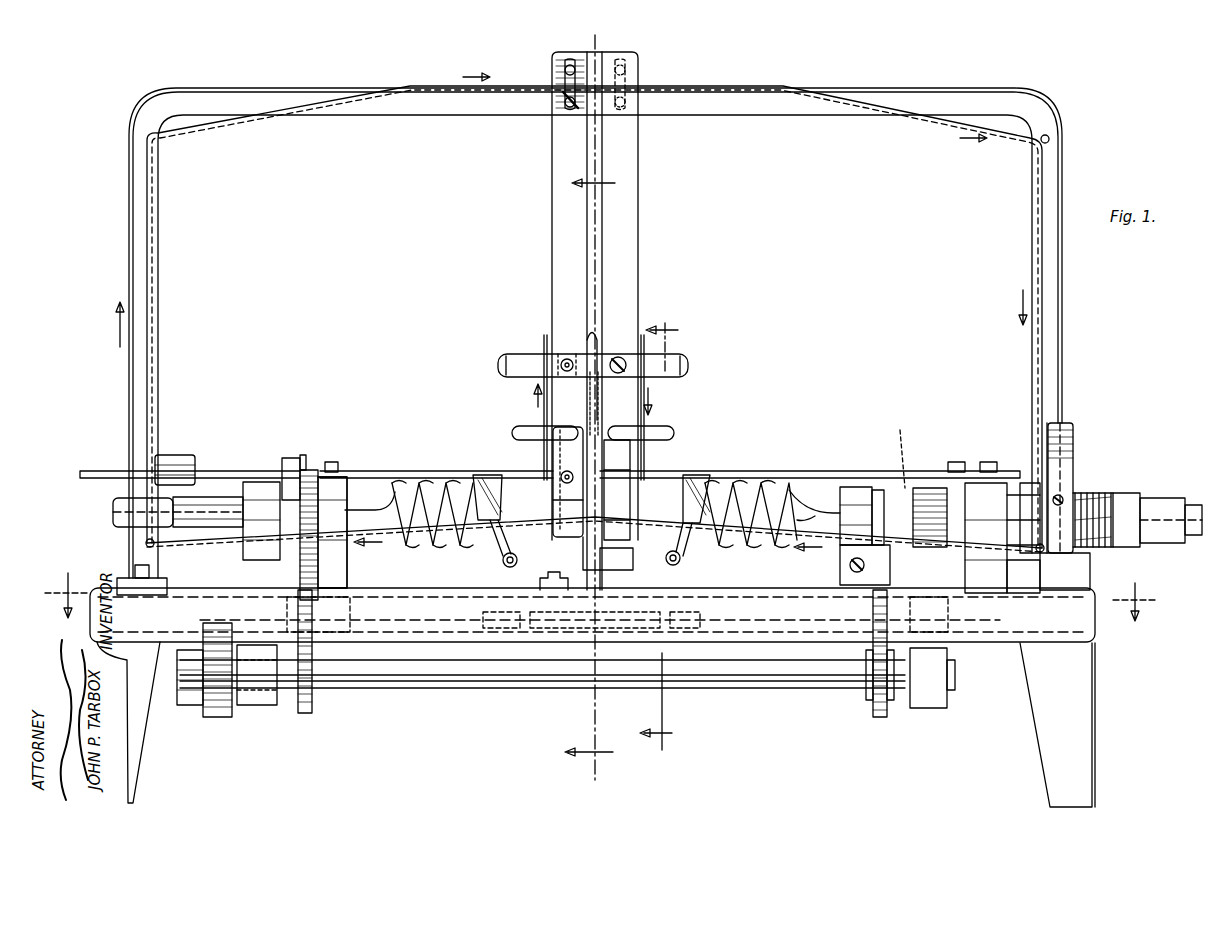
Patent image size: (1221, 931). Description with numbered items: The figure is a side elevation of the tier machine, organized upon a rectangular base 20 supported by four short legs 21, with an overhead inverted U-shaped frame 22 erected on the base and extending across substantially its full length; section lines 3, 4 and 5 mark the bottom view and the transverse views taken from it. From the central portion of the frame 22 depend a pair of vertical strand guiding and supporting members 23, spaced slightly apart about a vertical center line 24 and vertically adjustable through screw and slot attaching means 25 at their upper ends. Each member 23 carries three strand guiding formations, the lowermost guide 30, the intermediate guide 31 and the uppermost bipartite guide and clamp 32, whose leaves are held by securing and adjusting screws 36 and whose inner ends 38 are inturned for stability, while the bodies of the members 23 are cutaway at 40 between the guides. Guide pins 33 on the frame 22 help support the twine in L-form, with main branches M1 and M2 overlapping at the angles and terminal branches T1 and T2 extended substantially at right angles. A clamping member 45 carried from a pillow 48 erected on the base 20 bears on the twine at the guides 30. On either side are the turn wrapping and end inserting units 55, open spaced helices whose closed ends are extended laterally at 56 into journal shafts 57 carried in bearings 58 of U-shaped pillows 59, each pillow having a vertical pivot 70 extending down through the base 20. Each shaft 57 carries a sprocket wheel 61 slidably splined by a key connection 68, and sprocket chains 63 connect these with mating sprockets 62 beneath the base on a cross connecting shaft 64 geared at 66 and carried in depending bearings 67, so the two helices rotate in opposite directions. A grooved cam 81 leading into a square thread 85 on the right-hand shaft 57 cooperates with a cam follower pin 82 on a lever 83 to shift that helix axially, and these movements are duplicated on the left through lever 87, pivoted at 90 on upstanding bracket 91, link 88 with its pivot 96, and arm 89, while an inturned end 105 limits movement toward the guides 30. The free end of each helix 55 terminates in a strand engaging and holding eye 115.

The rectangular base 20 is at (1070, 628).
The short legs 21 is at (1094, 726).
The inverted U-shaped frame 22 is at (1060, 330).
The strand guiding and supporting members 23 is at (552, 235).
The vertical center line 24 is at (592, 38).
The screw and slot attaching means 25 is at (566, 105).
The lowermost strand guide 30 is at (550, 540).
The intermediate strand guide 31 is at (512, 433).
The uppermost guide and clamp 32 is at (500, 362).
The strand guiding and supporting pins 33 is at (162, 140).
The securing and adjusting screws 36 is at (620, 360).
The inner ends of guide members 38 is at (592, 330).
The cutaway 40 is at (552, 455).
The clamping member 45 is at (600, 412).
The pillow 48 is at (540, 578).
The turn wrapping and end inserting units 55 is at (425, 483).
The lateral extension of helix 56 is at (840, 490).
The journal shaft 57 is at (205, 497).
The bearing 58 is at (262, 482).
The U-shaped pillow 59 is at (347, 566).
The sprocket wheel 61 is at (330, 462).
The mating sprocket 62 is at (312, 708).
The sprocket chains 63 is at (868, 700).
The cross connecting shaft 64 is at (695, 690).
The gearing 66 is at (215, 717).
The depending bearings 67 is at (260, 705).
The sliding key connection 68 is at (292, 458).
The vertical pivots 70 is at (287, 608).
The grooved cam 81 is at (1125, 493).
The cam follower pin 82 is at (1062, 498).
The lever 83 is at (1073, 440).
The square thread 85 is at (1098, 493).
The lever 87 is at (970, 471).
The link 88 is at (710, 475).
The arm 89 is at (178, 455).
The pivot 90 is at (990, 466).
The upstanding bracket 91 is at (990, 593).
The pivot 96 is at (338, 462).
The inturned end 105 is at (1010, 520).
The strand engaging and holding eye 115 is at (672, 566).
The terminal branch T1 is at (650, 388).
The terminal branch T2 is at (542, 415).
The main branch M1 is at (365, 540).
The main branch M2 is at (812, 513).
The section line of FIG. 3 is at (600, 589).
The section line 4— 4 is at (597, 469).
The section line 5— 5 is at (666, 536).